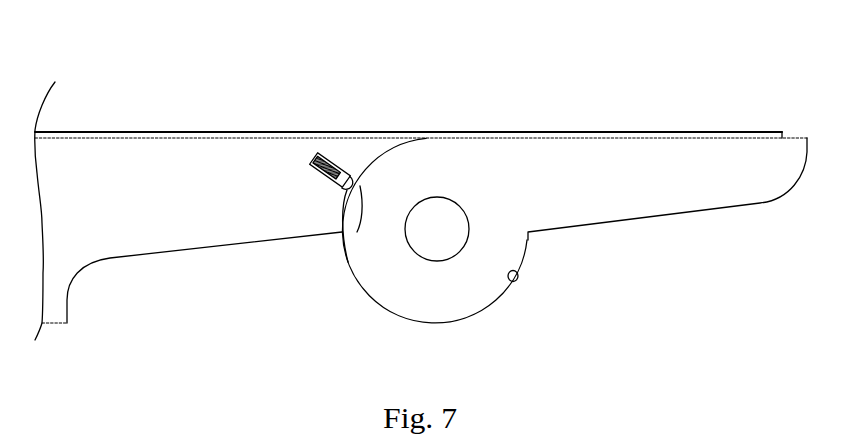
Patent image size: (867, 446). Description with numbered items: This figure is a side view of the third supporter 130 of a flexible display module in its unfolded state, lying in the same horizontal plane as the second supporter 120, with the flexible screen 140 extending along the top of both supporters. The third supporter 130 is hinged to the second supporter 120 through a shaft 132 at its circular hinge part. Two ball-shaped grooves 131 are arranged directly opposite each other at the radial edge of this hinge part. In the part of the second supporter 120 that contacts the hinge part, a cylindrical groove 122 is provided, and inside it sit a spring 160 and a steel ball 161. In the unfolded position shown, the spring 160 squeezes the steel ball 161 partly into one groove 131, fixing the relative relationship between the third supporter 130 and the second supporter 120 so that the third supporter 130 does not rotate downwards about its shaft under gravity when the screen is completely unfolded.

The second supporter 120 is at (90, 162).
The cylindrical groove 122 is at (323, 155).
The third supporter 130 is at (615, 158).
The groove 131 is at (357, 232).
The shaft 132 is at (445, 213).
The flexible screen 140 is at (710, 135).
The spring 160 is at (343, 163).
The steel ball 161 is at (357, 176).